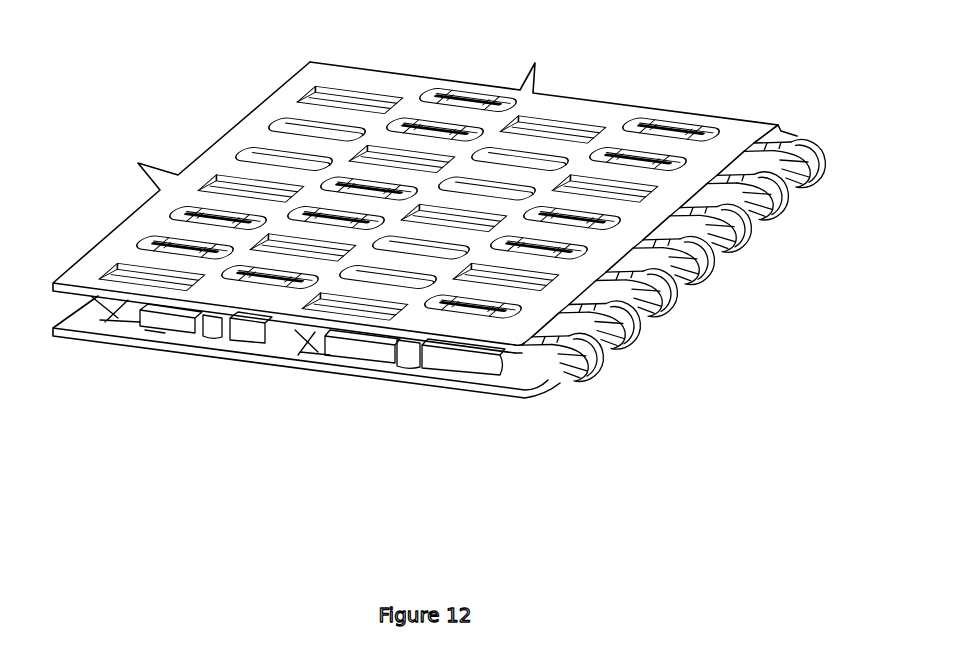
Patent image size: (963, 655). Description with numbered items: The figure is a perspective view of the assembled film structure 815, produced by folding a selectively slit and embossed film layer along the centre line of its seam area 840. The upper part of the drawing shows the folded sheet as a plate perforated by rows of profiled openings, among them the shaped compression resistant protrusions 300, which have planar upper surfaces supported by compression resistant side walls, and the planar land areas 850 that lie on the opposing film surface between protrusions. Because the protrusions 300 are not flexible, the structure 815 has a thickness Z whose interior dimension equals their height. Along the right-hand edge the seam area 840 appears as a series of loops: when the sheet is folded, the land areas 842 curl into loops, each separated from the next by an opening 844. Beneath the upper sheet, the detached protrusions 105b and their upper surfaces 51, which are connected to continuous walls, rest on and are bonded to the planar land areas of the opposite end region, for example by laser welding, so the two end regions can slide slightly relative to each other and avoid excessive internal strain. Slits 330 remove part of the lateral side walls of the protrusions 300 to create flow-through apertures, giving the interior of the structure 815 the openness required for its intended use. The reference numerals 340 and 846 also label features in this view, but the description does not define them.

The assembled film structure 815 is at (448, 237).
The compression resistant protrusion 300 is at (410, 117).
The planar land area 850 is at (633, 143).
The bar tab 340 is at (662, 126).
The seam area 840 is at (670, 302).
The land area 842 is at (667, 290).
The opening 844 is at (613, 347).
The lower hook connection 846 is at (557, 372).
The detached protrusion 105b is at (113, 320).
The slit 330 is at (233, 340).
The upper surface 51 is at (362, 343).
The thickness Z is at (45, 285).